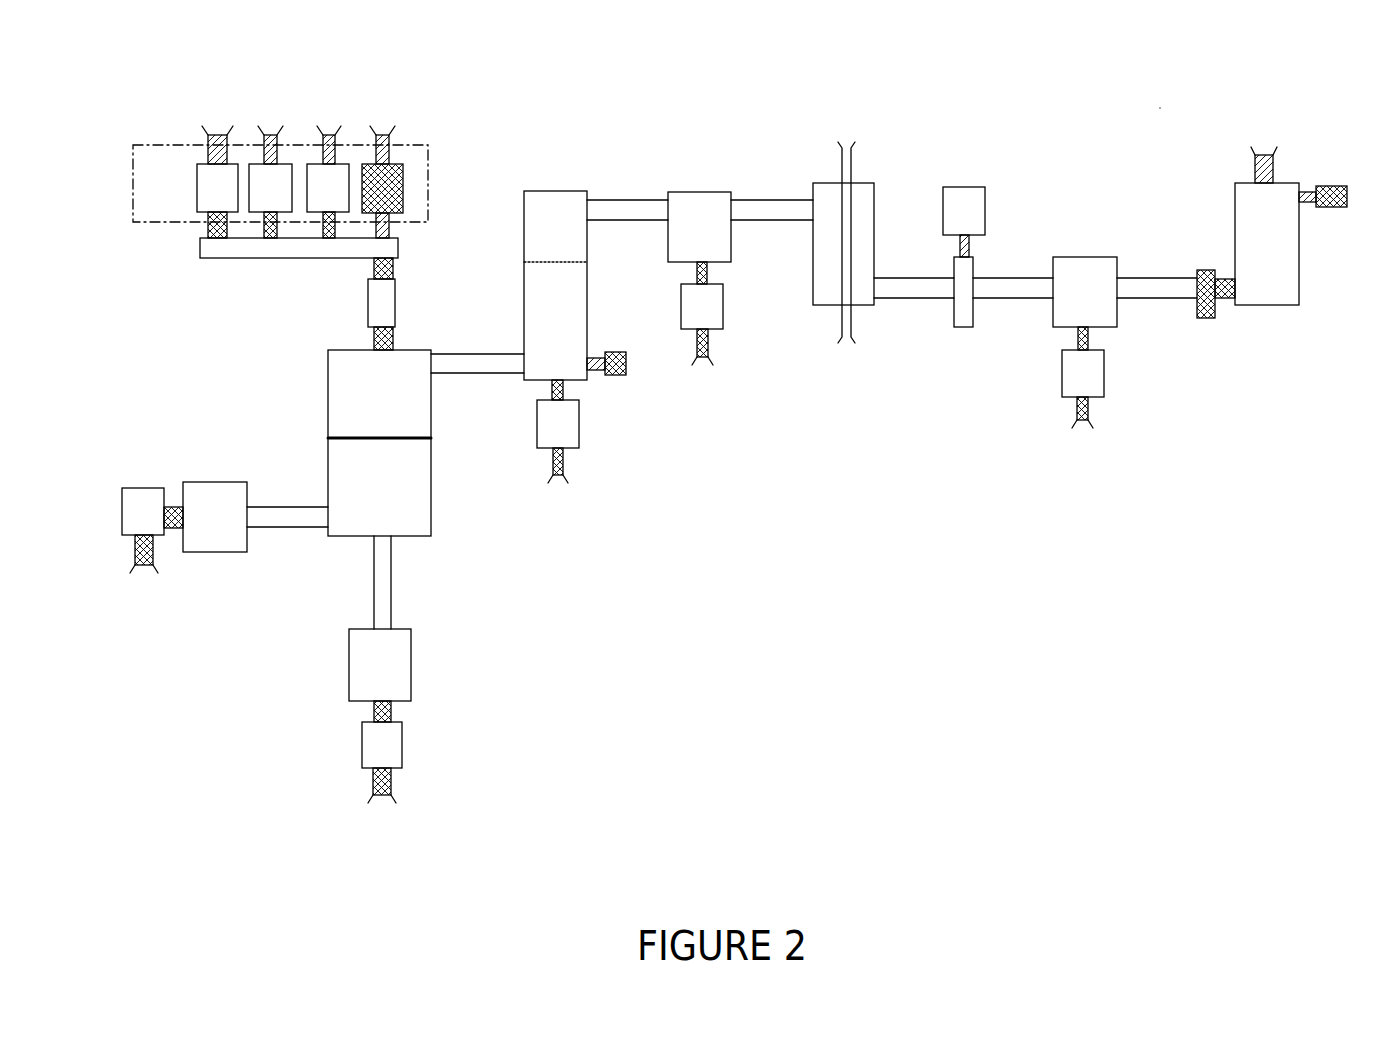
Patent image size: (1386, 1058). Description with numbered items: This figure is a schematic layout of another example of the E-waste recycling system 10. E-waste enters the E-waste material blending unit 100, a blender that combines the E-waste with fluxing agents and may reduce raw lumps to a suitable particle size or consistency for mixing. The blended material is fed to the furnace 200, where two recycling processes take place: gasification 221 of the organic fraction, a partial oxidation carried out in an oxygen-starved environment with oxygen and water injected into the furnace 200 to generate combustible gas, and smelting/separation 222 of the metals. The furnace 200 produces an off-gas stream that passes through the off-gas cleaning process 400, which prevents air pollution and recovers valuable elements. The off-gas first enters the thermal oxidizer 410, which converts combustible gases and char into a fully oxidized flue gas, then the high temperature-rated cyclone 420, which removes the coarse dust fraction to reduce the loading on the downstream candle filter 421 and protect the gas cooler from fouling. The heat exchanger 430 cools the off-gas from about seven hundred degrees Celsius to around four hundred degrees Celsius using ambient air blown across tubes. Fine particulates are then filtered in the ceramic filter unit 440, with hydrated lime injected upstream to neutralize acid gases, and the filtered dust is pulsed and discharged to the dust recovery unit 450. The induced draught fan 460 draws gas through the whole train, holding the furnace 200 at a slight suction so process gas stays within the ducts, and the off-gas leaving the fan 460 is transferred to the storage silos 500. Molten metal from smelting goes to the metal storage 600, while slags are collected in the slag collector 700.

The E-waste recycling system 10 is at (1160, 108).
The E-waste material blending unit 100 is at (170, 140).
The furnace 200 is at (304, 393).
The gasification 221 is at (328, 423).
The smelting/separation 222 is at (435, 499).
The off-gas cleaning process 400 is at (1062, 212).
The thermal oxidizer 410 is at (527, 302).
The high temperature-rated cyclone 420 is at (693, 192).
The candle filter 421 is at (720, 330).
The heat exchanger 430 is at (830, 183).
The ceramic filter unit 440 is at (972, 185).
The dust recovery unit 450 is at (1050, 325).
The induced draught fan 460 is at (1198, 322).
The storage silos 500 is at (1285, 167).
The metal storage 600 is at (445, 678).
The slag collector 700 is at (208, 570).